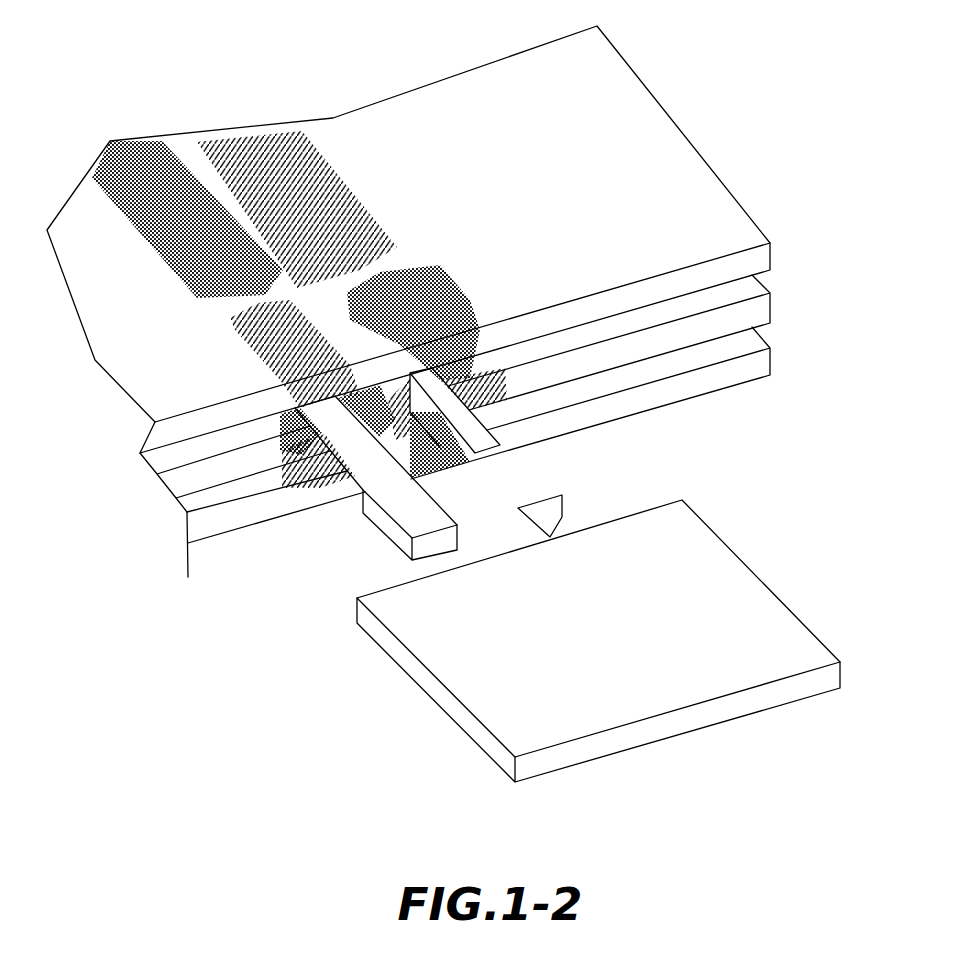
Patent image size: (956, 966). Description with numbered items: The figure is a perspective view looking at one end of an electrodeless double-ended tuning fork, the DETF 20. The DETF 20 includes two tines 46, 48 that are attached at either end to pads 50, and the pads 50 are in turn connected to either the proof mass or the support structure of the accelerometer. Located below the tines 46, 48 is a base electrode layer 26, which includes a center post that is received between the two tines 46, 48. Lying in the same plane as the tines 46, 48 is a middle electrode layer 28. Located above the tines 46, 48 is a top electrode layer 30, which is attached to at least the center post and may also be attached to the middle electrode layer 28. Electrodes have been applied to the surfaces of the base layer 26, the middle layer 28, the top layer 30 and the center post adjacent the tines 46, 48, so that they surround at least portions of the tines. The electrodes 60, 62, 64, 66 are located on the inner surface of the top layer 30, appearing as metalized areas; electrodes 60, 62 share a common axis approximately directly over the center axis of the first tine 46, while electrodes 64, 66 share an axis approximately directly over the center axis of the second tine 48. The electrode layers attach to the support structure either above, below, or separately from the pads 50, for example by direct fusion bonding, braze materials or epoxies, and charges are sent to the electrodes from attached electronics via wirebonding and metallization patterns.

The DETF 20 is at (785, 471).
The base electrode layer 26 is at (757, 362).
The middle electrode layer 28 is at (762, 311).
The top electrode layer 30 is at (434, 104).
The tine 46 is at (468, 432).
The tine 48 is at (368, 473).
The pads 50 is at (522, 674).
The electrode 60 is at (424, 294).
The electrode 62 is at (264, 141).
The electrode 64 is at (263, 350).
The electrode 66 is at (129, 142).